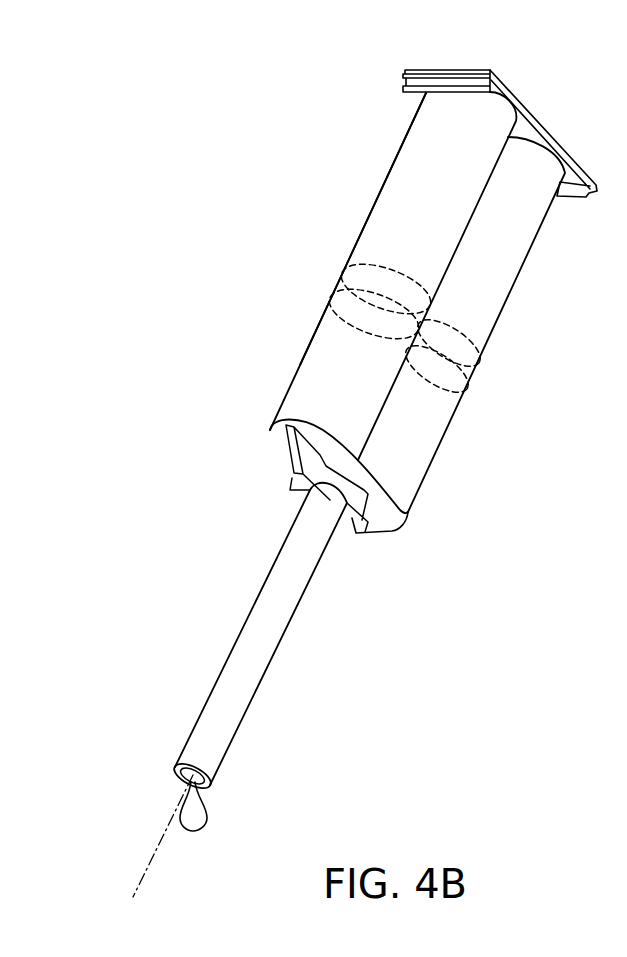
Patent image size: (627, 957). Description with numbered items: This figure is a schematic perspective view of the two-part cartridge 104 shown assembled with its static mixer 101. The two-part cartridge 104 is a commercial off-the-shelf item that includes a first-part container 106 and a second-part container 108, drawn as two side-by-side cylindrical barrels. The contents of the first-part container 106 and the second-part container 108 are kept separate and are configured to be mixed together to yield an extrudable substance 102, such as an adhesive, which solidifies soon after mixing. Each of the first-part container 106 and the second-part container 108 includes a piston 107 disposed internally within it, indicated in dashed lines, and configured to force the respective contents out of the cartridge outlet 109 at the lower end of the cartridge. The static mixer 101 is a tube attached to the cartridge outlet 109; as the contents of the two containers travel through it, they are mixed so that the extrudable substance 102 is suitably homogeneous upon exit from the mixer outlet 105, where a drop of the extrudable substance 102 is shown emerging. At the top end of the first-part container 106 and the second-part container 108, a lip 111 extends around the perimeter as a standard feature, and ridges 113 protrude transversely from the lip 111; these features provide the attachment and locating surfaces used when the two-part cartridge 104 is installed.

The static mixer 101 is at (236, 642).
The extrudable substance 102 is at (207, 810).
The two-part cartridge 104 is at (300, 366).
The mixer outlet 105 is at (172, 781).
The first-part container 106 is at (388, 177).
The piston 107 is at (343, 275).
The second-part container 108 is at (436, 454).
The cartridge outlet 109 is at (283, 483).
The lip 111 is at (513, 95).
The ridges 113 is at (405, 85).